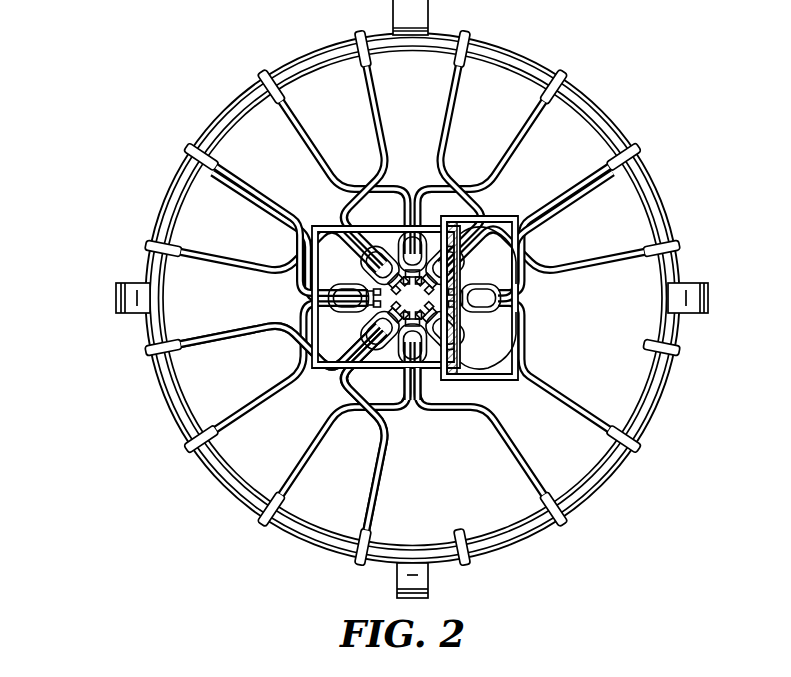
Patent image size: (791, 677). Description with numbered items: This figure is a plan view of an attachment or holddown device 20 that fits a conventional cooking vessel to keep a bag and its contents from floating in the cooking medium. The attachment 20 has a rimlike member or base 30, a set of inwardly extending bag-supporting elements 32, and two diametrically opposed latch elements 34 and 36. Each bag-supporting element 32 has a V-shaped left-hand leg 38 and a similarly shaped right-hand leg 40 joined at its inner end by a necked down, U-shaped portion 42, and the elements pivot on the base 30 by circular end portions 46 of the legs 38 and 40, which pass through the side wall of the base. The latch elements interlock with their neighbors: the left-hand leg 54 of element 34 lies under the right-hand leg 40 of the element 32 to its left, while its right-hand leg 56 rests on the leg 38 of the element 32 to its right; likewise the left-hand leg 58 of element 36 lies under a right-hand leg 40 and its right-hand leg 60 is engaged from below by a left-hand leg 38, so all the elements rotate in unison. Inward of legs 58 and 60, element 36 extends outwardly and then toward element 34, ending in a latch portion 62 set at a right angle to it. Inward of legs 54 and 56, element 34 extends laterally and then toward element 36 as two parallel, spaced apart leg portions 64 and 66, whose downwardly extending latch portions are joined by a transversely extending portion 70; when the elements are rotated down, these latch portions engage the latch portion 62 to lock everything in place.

The attachment or holddown device 20 is at (378, 299).
The rimlike member or base 30 is at (150, 221).
The bag-supporting elements 32 is at (261, 277).
The latch element 34 is at (559, 180).
The latch element 36 is at (238, 172).
The left-hand leg 38 is at (308, 447).
The right-hand leg 40 is at (366, 491).
The necked down, U-shaped portion 42 is at (404, 386).
The circular end portions 46 is at (358, 561).
The left-hand leg 54 is at (572, 434).
The right-hand leg 56 is at (602, 166).
The left-hand leg 58 is at (266, 228).
The right-hand leg 60 is at (242, 401).
The latch portion 62 is at (460, 273).
The leg portion 64 is at (490, 385).
The leg portion 66 is at (495, 217).
The transversely extending portion 70 is at (434, 295).